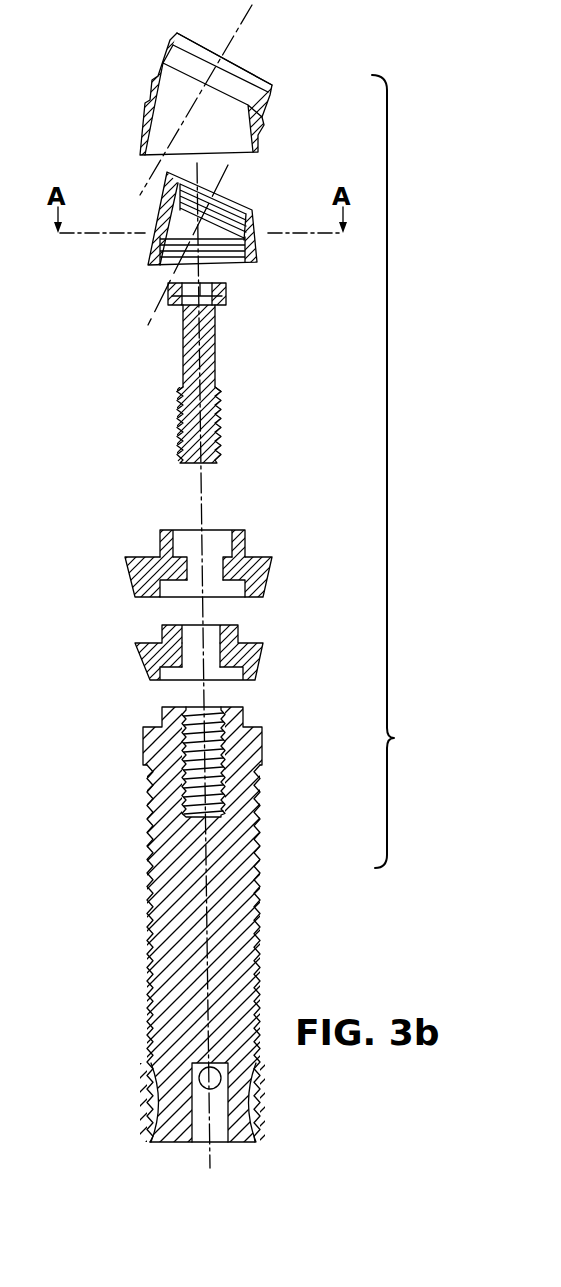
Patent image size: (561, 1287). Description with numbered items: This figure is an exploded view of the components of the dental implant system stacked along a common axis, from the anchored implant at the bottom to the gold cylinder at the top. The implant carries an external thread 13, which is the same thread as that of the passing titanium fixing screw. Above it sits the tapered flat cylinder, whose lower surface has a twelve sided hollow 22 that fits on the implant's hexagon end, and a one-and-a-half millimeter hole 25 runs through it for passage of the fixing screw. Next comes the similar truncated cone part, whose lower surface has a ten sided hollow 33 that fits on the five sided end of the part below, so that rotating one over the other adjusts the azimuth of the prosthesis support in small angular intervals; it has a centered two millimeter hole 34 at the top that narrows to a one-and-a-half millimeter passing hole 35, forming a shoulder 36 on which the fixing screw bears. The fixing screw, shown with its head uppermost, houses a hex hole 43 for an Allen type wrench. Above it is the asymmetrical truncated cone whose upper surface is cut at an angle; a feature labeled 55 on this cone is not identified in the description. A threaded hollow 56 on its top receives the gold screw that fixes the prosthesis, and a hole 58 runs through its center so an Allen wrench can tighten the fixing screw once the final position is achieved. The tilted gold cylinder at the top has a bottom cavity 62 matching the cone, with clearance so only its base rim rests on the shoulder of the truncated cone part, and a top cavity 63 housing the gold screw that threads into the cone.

The implant thread 13 is at (215, 778).
The twelve sided hollow 22 is at (236, 674).
The hole 25 is at (195, 652).
The ten sided hollow 33 is at (244, 558).
The centered hole 34 is at (218, 533).
The passing hole 35 is at (210, 568).
The shoulder 36 is at (187, 548).
The hex hole 43 is at (226, 293).
The nut 55 is at (257, 258).
The threaded hollow 56 is at (150, 176).
The hole 58 is at (230, 203).
The cavity 62 is at (257, 150).
The cavity 63 is at (233, 83).